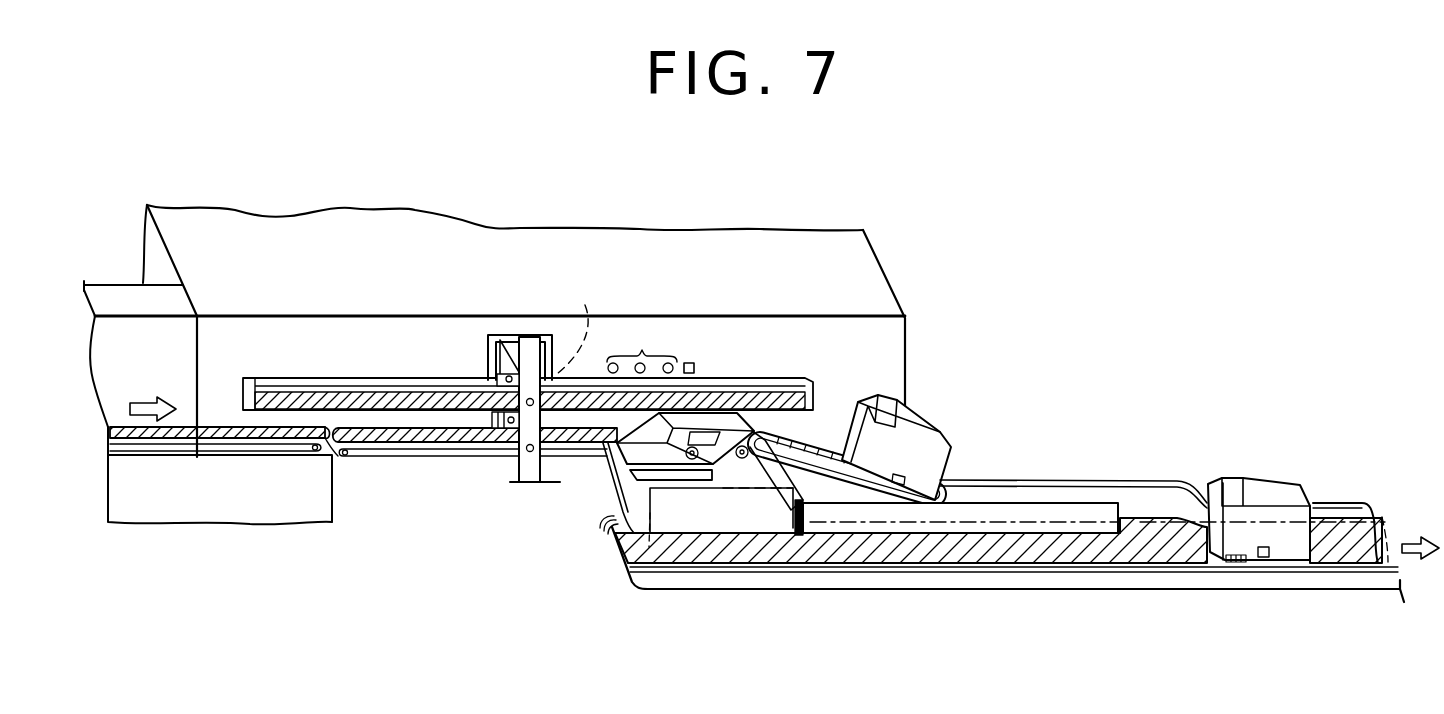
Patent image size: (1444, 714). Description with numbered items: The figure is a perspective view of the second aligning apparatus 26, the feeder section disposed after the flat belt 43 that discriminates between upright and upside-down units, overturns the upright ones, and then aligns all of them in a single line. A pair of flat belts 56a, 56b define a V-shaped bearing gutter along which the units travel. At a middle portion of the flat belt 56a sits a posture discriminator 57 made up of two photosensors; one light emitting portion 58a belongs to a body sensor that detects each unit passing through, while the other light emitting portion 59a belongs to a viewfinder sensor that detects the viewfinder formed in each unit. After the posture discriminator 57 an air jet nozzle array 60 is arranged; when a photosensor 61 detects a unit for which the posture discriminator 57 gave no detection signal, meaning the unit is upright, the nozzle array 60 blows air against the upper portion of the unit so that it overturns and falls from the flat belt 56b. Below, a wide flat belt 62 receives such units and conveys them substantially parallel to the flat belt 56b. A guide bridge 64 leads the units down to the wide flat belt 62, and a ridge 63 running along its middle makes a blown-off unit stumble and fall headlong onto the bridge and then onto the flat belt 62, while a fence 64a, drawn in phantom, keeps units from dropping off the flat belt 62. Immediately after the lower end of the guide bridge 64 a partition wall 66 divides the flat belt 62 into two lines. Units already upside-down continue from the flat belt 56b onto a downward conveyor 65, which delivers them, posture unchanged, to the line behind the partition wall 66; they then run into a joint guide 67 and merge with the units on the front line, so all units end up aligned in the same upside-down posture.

The second aligning apparatus 26 is at (915, 275).
The flat belt 43 is at (197, 457).
The flat belt 56a is at (400, 395).
The flat belt 56b is at (402, 457).
The posture discriminator 57 is at (518, 343).
The light emitting portion 58a is at (553, 331).
The light emitting portion 59a is at (512, 460).
The air jet nozzle array 60 is at (642, 348).
The photosensor 61 is at (696, 365).
The wide flat belt 62 is at (707, 555).
The ridge 63 is at (647, 477).
The guide bridge 64 is at (765, 517).
The fence 64a is at (632, 555).
The downward conveyor 65 is at (957, 482).
The partition wall 66 is at (1053, 512).
The joint guide 67 is at (1175, 500).